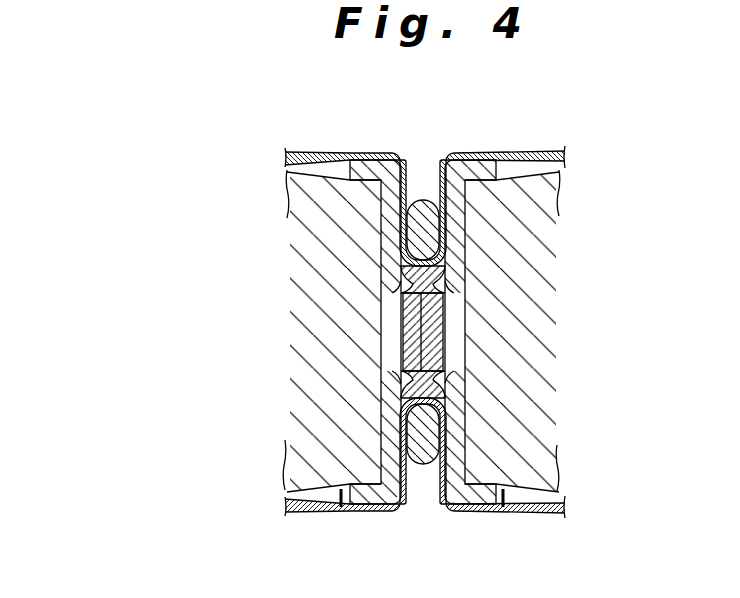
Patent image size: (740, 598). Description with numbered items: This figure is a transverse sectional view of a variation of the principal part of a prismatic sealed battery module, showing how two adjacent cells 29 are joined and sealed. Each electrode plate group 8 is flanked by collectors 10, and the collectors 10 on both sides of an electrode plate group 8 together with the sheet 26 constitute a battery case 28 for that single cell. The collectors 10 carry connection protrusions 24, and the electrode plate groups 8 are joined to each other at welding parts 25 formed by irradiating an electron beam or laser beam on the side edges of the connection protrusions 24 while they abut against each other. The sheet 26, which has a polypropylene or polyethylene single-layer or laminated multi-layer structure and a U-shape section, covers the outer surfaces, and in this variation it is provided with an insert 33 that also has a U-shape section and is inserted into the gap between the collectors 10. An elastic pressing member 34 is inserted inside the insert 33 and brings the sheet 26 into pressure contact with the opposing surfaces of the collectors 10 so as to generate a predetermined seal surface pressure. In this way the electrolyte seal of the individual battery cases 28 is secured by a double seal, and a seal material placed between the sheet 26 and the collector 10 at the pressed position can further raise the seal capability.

The electrode plate group 8 is at (297, 327).
The collector 10 is at (402, 500).
The connection protrusion 24 is at (463, 361).
The welding part 25 is at (462, 262).
The sheet 26 is at (334, 154).
The battery case 28 is at (341, 508).
The cell 29 is at (274, 219).
The insert 33 is at (444, 165).
The elastic pressing member 34 is at (425, 206).